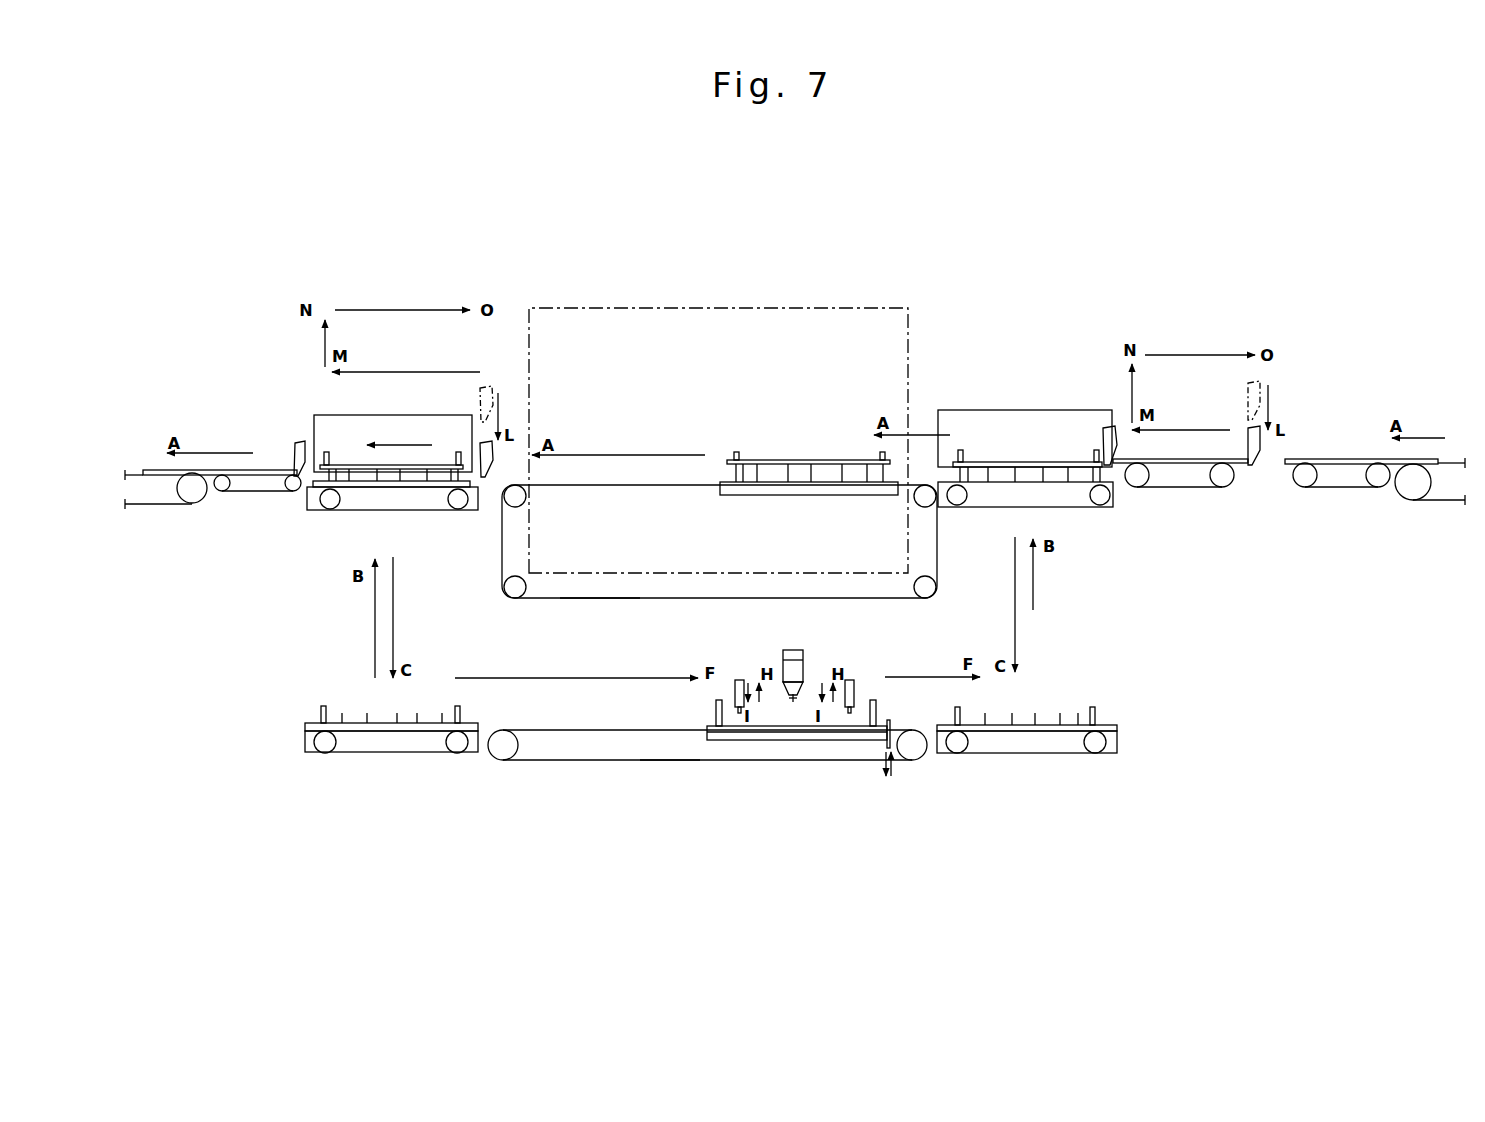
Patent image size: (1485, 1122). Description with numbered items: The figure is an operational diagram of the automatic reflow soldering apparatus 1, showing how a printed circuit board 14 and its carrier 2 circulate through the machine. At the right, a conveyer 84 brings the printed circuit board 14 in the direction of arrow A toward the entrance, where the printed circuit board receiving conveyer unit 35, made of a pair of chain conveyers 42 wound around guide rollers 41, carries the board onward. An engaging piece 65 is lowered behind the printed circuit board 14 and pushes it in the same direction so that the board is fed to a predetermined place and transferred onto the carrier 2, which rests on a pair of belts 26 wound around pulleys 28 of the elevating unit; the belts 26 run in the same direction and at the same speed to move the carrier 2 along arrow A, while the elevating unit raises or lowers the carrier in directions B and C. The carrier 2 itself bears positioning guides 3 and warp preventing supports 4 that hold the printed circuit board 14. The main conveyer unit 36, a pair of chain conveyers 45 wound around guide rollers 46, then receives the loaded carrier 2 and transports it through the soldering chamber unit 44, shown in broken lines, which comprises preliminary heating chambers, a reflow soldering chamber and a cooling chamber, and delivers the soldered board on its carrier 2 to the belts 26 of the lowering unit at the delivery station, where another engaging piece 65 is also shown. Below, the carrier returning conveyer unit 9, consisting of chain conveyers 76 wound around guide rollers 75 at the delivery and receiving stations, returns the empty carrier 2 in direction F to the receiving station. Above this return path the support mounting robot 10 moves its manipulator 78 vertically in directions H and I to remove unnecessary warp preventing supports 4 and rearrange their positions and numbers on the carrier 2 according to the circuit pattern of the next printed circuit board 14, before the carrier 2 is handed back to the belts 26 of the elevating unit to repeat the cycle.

The automatic reflow soldering apparatus 1 is at (1137, 290).
The carrier 2 is at (762, 498).
The positioning guides 3 is at (731, 455).
The warp preventing supports 4 is at (363, 720).
The carrier returning conveyer unit 9 is at (607, 763).
The support mounting robot 10 is at (808, 652).
The printed circuit board 14 is at (819, 456).
The belts 26 is at (425, 512).
The pulleys 28 is at (1088, 508).
The printed circuit board receiving conveyer unit 35 is at (1170, 489).
The main conveyer unit 36 is at (703, 602).
The guide rollers 41 is at (1200, 480).
The chain conveyers 42 is at (1192, 490).
The soldering chamber unit 44 is at (785, 306).
The chain conveyers 45 is at (595, 600).
The guide rollers 46 is at (521, 508).
The engaging piece 65 is at (297, 445).
The guide rollers 75 is at (519, 756).
The chain conveyers 76 is at (668, 762).
The manipulator 78 is at (784, 661).
The conveyer 84 is at (1350, 488).